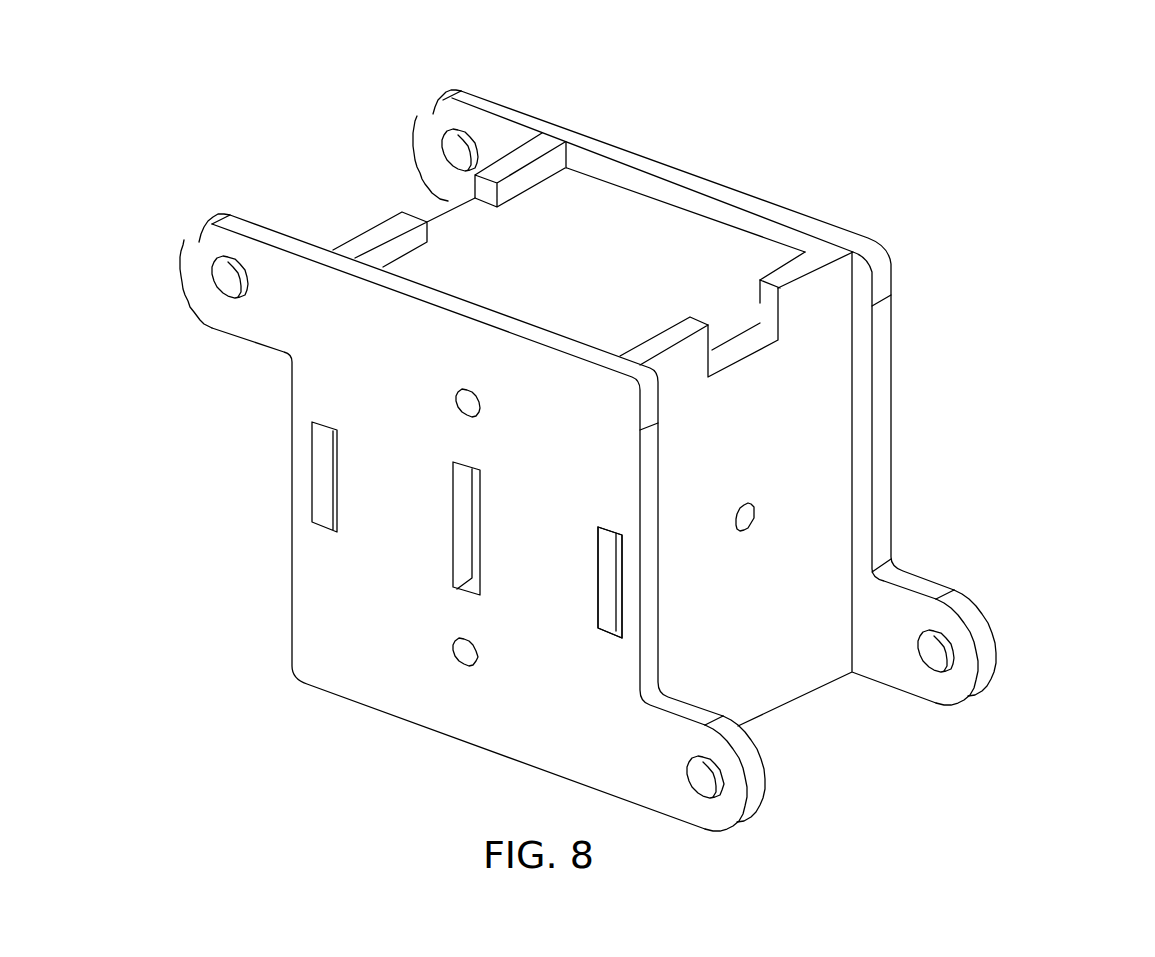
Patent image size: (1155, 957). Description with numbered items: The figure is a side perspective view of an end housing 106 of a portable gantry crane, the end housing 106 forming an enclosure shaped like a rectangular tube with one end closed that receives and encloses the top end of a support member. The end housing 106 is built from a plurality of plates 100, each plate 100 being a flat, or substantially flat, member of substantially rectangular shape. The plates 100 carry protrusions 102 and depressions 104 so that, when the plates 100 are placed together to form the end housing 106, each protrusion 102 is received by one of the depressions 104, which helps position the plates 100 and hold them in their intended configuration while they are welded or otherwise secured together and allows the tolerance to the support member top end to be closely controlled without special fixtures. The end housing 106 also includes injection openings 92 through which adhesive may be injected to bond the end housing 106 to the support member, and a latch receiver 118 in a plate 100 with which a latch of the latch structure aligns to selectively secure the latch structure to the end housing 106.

The end housing 106 is at (651, 441).
The plate 100 is at (367, 228).
The injection opening 92 is at (480, 397).
The latch receiver 118 is at (482, 489).
The protrusion 102 is at (758, 341).
The depression 104 is at (703, 372).